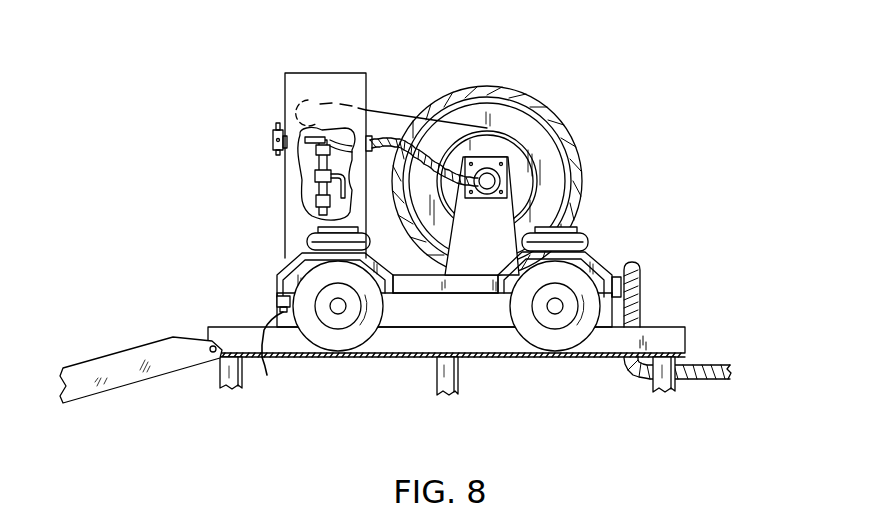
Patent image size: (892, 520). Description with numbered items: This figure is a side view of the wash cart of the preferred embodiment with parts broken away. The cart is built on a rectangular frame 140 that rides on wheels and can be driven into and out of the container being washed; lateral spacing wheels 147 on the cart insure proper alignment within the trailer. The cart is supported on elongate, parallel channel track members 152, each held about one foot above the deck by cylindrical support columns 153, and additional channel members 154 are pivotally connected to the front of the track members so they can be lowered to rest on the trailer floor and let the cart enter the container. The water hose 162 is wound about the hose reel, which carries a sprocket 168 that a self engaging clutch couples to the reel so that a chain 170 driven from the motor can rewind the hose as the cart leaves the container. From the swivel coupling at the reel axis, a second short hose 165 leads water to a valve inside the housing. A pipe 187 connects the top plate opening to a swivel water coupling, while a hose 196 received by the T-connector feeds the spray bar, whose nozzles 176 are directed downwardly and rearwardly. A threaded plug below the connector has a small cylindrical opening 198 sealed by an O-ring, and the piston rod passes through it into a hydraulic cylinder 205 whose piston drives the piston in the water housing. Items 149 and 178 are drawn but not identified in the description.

The rectangular frame 140 is at (421, 218).
The lateral spacing wheels 147 is at (587, 238).
The control box 149 is at (313, 146).
The channel track members 152 is at (668, 340).
The cylindrical support columns 153 is at (437, 380).
The additional channel members 154 is at (127, 370).
The water hose 162 is at (638, 268).
The second short hose 165 is at (512, 156).
The sprocket 168 is at (523, 163).
The chain 170 is at (396, 113).
The nozzles 176 is at (269, 356).
The bracket 178 is at (277, 302).
The pipe 187 is at (453, 217).
The hose 196 is at (348, 200).
The small cylindrical opening 198 is at (272, 137).
The hydraulic cylinder 205 is at (317, 203).